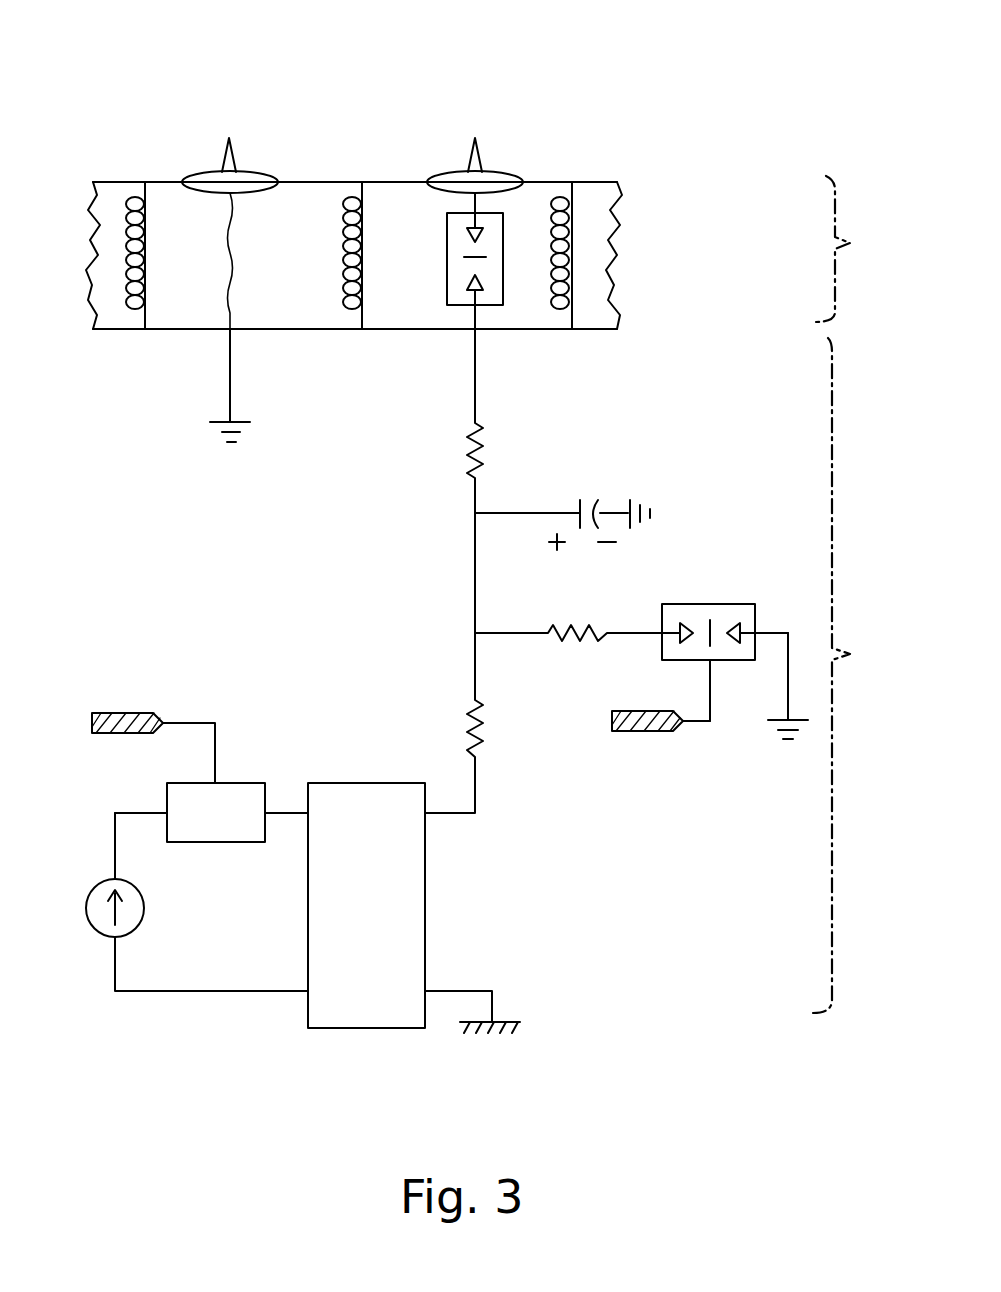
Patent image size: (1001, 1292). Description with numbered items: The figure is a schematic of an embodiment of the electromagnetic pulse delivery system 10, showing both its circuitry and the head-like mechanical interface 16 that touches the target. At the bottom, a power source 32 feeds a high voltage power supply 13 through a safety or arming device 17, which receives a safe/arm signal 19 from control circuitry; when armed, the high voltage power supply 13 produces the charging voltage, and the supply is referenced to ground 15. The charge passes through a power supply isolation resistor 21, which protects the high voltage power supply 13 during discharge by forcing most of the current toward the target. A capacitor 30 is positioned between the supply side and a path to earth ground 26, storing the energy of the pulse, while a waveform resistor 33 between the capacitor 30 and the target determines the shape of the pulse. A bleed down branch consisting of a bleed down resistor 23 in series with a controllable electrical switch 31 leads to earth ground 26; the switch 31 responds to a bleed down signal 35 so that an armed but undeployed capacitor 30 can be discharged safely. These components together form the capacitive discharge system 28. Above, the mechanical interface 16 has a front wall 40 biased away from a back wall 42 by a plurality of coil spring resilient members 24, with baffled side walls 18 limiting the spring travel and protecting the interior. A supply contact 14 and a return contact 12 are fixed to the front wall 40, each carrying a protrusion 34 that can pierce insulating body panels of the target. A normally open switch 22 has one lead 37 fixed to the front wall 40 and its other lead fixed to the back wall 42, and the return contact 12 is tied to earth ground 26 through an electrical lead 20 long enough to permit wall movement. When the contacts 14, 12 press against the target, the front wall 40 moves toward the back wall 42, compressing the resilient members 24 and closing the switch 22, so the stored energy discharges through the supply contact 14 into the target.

The electromagnetic pulse delivery system 10 is at (73, 98).
The return contact 12 is at (258, 174).
The high voltage power supply 13 is at (366, 1028).
The supply contact 14 is at (505, 174).
The ground 15 is at (508, 1018).
The mechanical interface 16 is at (598, 178).
The safety or arming device 17 is at (208, 843).
The baffled side walls 18 is at (90, 252).
The safe/arm signal 19 is at (118, 713).
The electrical lead 20 is at (232, 238).
The power supply isolation resistor 21 is at (482, 740).
The switch 22 is at (447, 274).
The bleed down resistor 23 is at (577, 640).
The resilient members 24 is at (133, 310).
The earth ground 26 is at (215, 425).
The capacitive discharge system 28 is at (851, 675).
The capacitor 30 is at (578, 498).
The controllable electrical switch 31 is at (700, 604).
The power source 32 is at (88, 922).
The waveform resistor 33 is at (470, 455).
The protrusion 34 is at (226, 145).
The bleed down signal 35 is at (645, 731).
The lead 37 is at (470, 200).
The front wall 40 is at (393, 182).
The back wall 42 is at (395, 329).